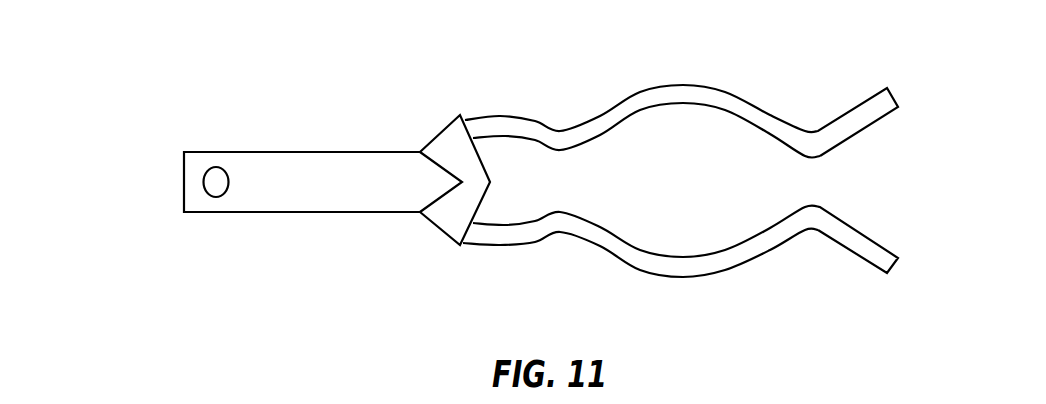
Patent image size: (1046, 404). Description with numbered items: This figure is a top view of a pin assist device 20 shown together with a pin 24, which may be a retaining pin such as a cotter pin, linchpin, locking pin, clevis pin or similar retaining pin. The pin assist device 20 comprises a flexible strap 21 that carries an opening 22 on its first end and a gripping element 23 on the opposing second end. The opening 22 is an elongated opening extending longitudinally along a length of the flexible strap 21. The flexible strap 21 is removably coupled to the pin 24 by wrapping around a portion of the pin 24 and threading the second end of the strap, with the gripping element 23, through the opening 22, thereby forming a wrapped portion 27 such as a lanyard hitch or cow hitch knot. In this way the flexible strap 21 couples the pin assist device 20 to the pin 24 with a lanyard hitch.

The pin assist device 20 is at (170, 121).
The flexible strap 21 is at (310, 172).
The opening 22 is at (430, 183).
The gripping element 23 is at (220, 188).
The pin 24 is at (538, 133).
The wrapped portion 27 is at (412, 127).